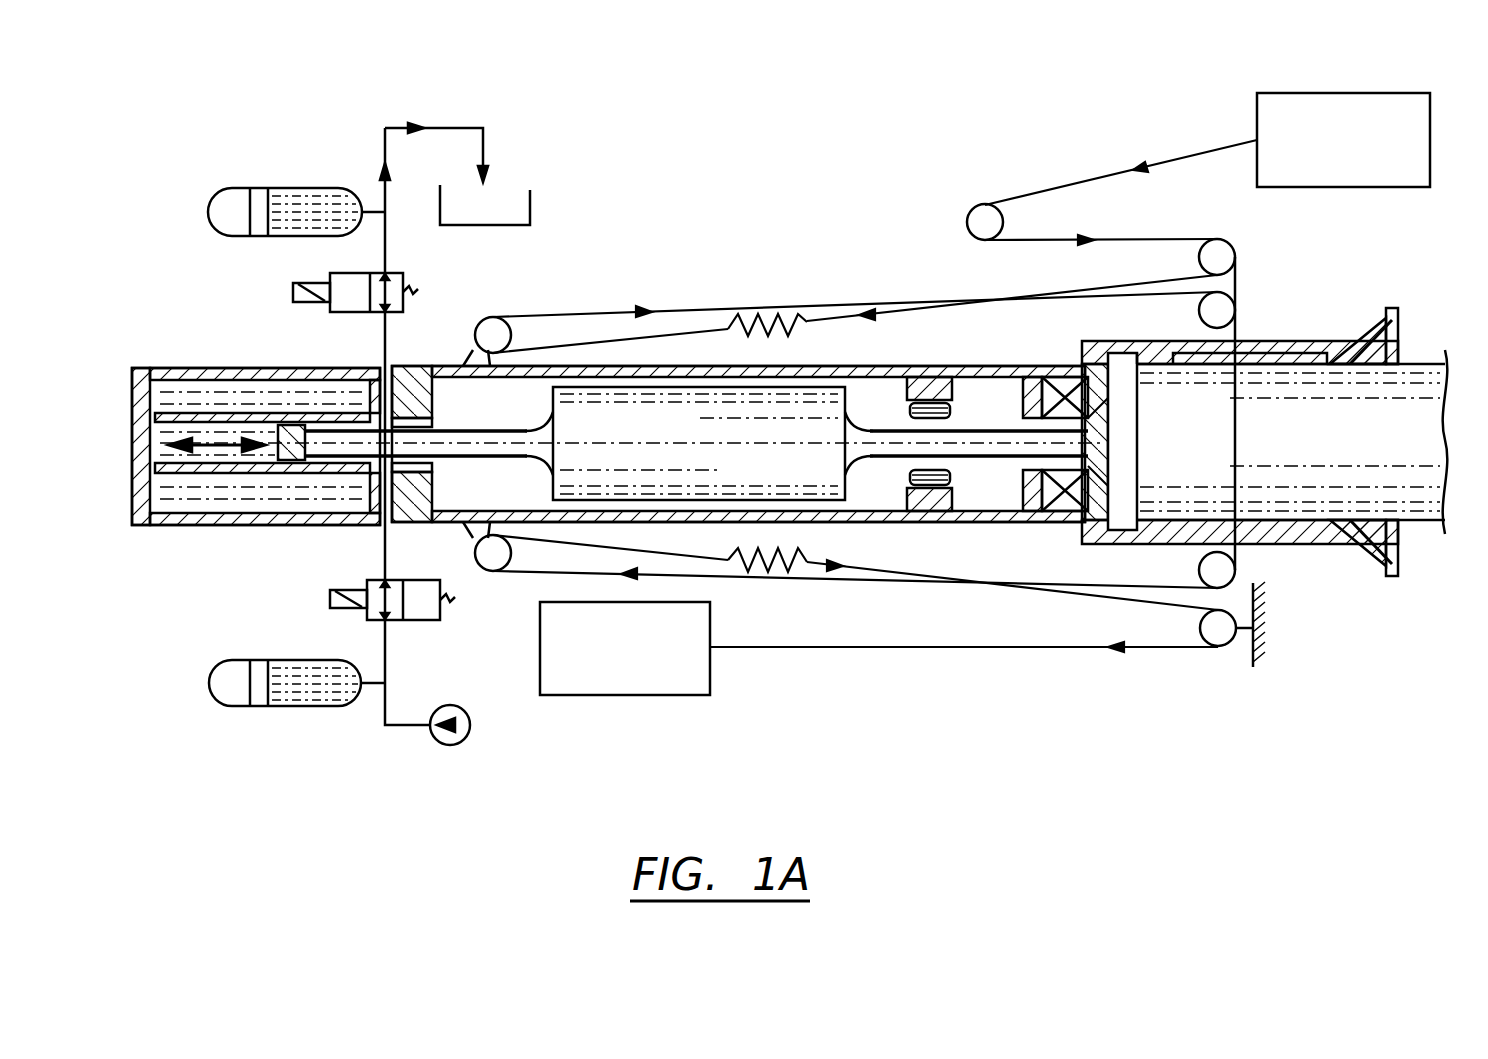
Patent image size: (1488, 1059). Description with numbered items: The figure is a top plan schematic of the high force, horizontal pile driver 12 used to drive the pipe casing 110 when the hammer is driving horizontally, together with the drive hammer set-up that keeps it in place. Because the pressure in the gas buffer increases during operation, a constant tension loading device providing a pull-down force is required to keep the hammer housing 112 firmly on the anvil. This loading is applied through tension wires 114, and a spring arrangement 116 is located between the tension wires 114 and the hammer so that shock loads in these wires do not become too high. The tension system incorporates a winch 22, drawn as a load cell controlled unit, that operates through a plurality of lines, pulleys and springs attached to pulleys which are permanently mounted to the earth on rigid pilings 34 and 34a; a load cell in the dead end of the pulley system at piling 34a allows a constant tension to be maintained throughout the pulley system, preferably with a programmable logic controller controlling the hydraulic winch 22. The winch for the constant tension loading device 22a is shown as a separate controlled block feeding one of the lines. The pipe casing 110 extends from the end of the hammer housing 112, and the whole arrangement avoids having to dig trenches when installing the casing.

The horizontal pile driver 12 is at (915, 178).
The winch 22 is at (1430, 135).
The winch for controlled tension load 22a is at (540, 656).
The rigid piling 34 is at (1224, 648).
The rigid piling 34a is at (1236, 259).
The pipe casing 110 is at (1408, 395).
The hammer housing 112 is at (423, 366).
The tension wires 114 is at (572, 313).
The spring arrangement 116 is at (749, 322).